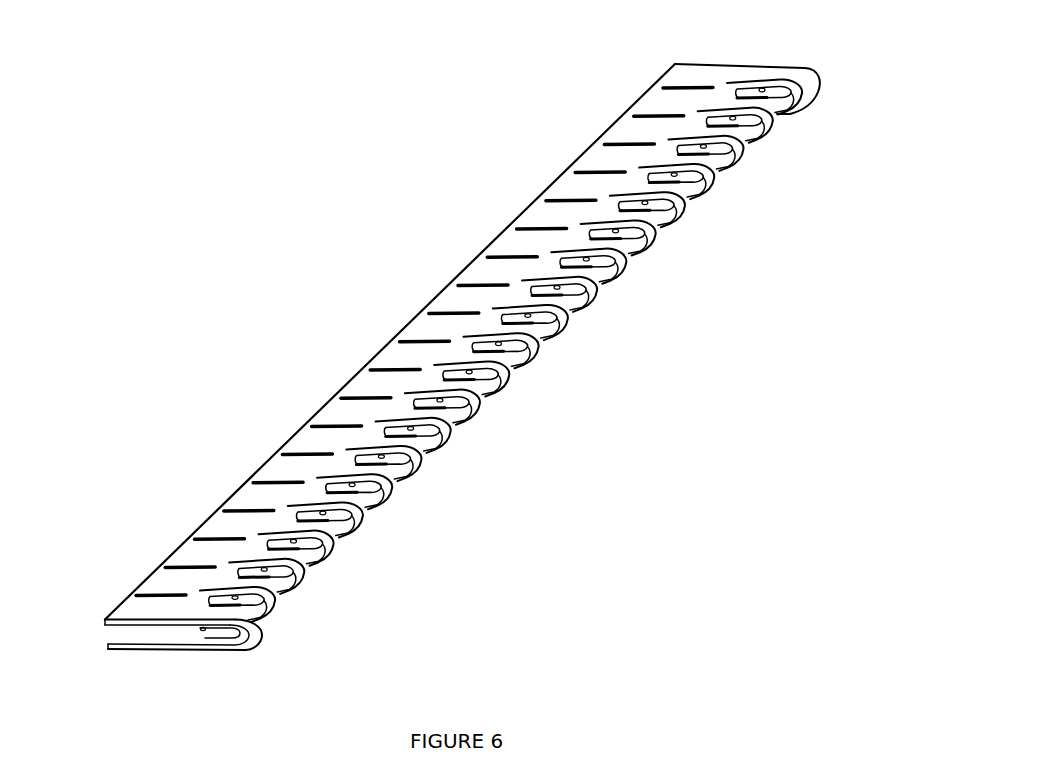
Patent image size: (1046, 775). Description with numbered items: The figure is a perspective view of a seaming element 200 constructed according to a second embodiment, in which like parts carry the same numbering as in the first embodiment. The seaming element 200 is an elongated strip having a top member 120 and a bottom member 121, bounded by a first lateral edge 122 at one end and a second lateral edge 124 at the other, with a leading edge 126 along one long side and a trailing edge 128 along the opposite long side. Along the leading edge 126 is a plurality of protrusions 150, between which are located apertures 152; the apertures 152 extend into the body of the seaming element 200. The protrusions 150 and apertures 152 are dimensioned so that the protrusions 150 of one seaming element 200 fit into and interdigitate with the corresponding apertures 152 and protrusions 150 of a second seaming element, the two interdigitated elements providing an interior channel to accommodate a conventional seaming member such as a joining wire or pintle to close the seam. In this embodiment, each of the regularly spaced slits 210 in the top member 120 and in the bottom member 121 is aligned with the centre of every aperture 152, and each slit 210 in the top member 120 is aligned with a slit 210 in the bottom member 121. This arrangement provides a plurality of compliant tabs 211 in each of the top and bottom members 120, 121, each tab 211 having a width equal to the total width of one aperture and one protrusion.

The seaming element 200 is at (444, 365).
The top member 120 is at (693, 110).
The bottom member 121 is at (188, 653).
The first lateral edge 122 is at (155, 620).
The second lateral edge 124 is at (767, 68).
The leading edge 126 is at (648, 264).
The trailing edge 128 is at (228, 495).
The protrusions 150 is at (365, 512).
The apertures 152 is at (467, 412).
The slits 210 is at (303, 456).
The compliant tabs 211 is at (440, 333).